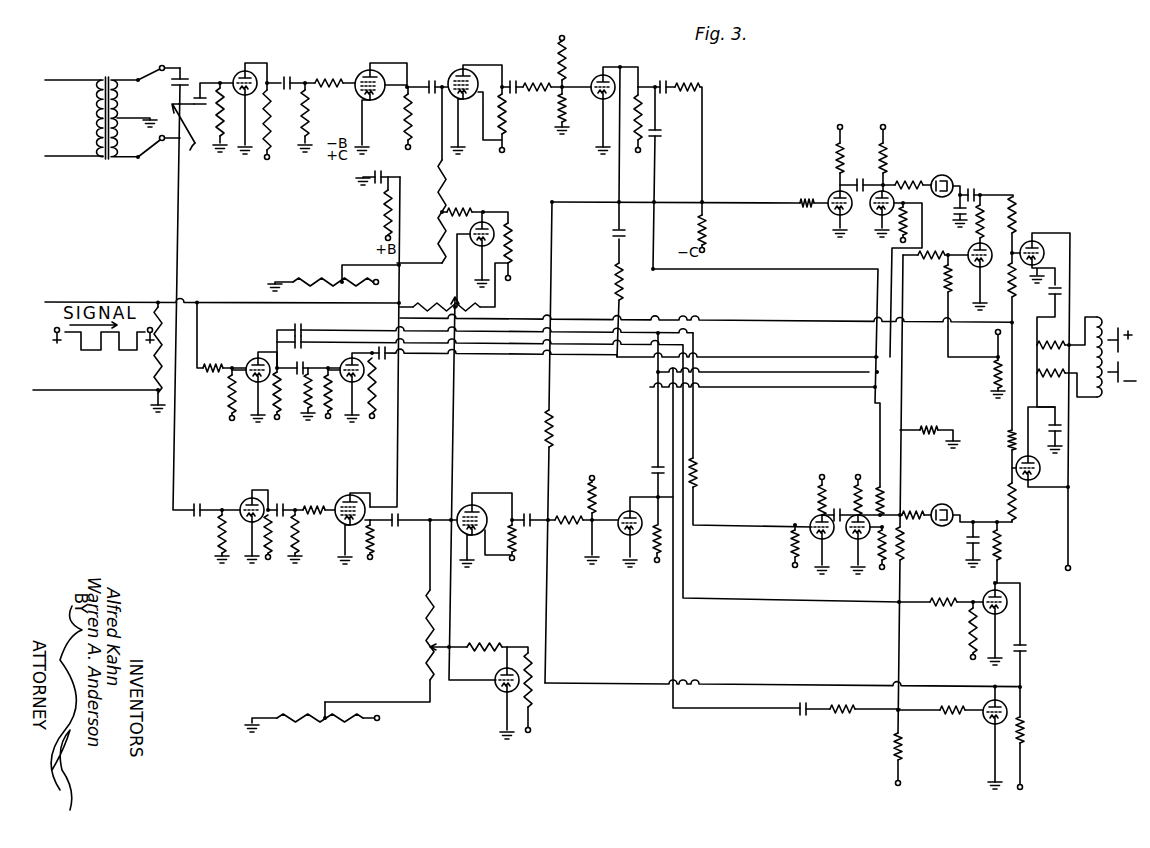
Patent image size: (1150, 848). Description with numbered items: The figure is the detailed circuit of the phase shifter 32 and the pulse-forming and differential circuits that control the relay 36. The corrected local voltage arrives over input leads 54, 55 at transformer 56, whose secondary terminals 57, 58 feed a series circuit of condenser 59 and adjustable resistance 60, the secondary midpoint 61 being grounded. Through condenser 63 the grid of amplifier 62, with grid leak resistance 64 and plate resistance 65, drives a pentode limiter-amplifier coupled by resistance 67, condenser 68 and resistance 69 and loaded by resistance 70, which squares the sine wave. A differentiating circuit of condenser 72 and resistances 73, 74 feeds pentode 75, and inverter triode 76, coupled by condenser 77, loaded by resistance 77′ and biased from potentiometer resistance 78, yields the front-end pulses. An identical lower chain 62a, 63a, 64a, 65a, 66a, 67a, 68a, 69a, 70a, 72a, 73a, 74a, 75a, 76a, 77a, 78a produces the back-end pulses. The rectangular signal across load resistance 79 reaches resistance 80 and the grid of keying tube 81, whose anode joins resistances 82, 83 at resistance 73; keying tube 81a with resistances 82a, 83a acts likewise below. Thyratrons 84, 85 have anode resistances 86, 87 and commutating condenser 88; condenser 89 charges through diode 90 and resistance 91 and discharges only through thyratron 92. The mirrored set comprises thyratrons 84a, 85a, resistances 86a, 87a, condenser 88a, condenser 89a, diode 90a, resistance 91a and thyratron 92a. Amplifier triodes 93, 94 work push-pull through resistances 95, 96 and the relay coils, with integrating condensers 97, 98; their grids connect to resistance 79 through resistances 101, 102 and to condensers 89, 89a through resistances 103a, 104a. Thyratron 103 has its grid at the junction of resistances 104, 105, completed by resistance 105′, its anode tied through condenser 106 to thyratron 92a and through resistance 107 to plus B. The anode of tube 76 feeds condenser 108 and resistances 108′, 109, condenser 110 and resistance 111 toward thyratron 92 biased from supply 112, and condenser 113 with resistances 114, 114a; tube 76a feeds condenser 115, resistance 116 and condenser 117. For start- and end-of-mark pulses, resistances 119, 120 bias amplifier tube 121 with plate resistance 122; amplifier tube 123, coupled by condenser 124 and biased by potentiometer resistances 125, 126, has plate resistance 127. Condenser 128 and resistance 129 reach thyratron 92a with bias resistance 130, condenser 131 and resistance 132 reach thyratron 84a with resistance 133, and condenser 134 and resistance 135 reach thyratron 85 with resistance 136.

The input line 54 is at (72, 78).
The input line 55 is at (66, 155).
The transformer 56 is at (108, 76).
The secondary terminal 57 is at (156, 69).
The secondary terminal 58 is at (150, 146).
The condenser 59 is at (179, 74).
The adjustable resistance 60 is at (199, 155).
The midpoint of the secondary 61 is at (120, 116).
The phase shifter 32 is at (175, 115).
The amplifier 62 is at (238, 72).
The condenser 63 is at (200, 106).
The grid leak resistance 64 is at (227, 117).
The resistance 65 is at (266, 106).
The resistance 67 is at (326, 80).
The condenser 68 is at (288, 77).
The resistance 69 is at (306, 114).
The resistance 70 is at (411, 115).
The condenser 72 is at (433, 79).
The resistance 73 is at (436, 202).
The resistance 74 is at (318, 276).
The pentode 75 is at (472, 74).
The inverter triode 76 is at (596, 76).
The condenser 77 is at (517, 80).
The resistance 77′ is at (642, 94).
The potentiometer resistance 78 is at (555, 104).
The signal load resistance 79 is at (154, 372).
The resistance 80 is at (459, 302).
The keying tube 81 is at (472, 225).
The resistance 82 is at (512, 238).
The resistance 83 is at (473, 212).
The thyratron 84 is at (832, 196).
The thyratron 85 is at (889, 192).
The resistance 86 is at (844, 156).
The resistance 87 is at (889, 154).
The commutating condenser 88 is at (860, 179).
The condenser 89 is at (975, 189).
The diode 90 is at (945, 175).
The resistance 91 is at (911, 178).
The thyratron 92 is at (986, 244).
The amplifier triode 93 is at (1044, 248).
The amplifier triode 94 is at (1040, 475).
The resistance 95 is at (1055, 342).
The resistance 96 is at (1067, 371).
The integrating condenser 97 is at (1060, 287).
The integrating condenser 98 is at (1049, 426).
The resistance 101 is at (1011, 289).
The resistance 102 is at (1010, 446).
The thyratron 103 is at (994, 725).
The resistance 103a is at (1017, 218).
The resistance 104 is at (903, 745).
The resistance 104a is at (1016, 503).
The resistance 105 is at (904, 539).
The resistance 105′ is at (927, 430).
The condenser 106 is at (1027, 647).
The resistance 107 is at (1026, 726).
The condenser 108 is at (662, 136).
The resistance 108′ is at (886, 486).
The resistance 109 is at (898, 557).
The condenser 110 is at (612, 233).
The resistance 111 is at (615, 287).
The minus C supply 112 is at (967, 381).
The condenser 113 is at (668, 94).
The resistance 114 is at (690, 83).
The resistance 114a is at (551, 433).
The condenser 115 is at (651, 469).
The resistance 116 is at (925, 262).
The condenser 117 is at (805, 718).
The resistance 119 is at (215, 365).
The resistance 120 is at (228, 392).
The amplifier tube 121 is at (252, 359).
The resistance 122 is at (277, 391).
The amplifier tube 123 is at (355, 358).
The condenser 124 is at (302, 365).
The potentiometer resistance 125 is at (306, 383).
The potentiometer resistance 126 is at (323, 400).
The resistance 127 is at (403, 393).
The condenser 128 is at (306, 337).
The resistance 129 is at (941, 593).
The resistance 130 is at (971, 632).
The condenser 131 is at (295, 324).
The resistance 132 is at (692, 461).
The resistance 133 is at (783, 555).
The condenser 134 is at (402, 358).
The resistance 135 is at (955, 212).
The resistance 136 is at (910, 224).
The relay 36 is at (1115, 325).
The amplifier 62a is at (249, 493).
The condenser 63a is at (197, 502).
The grid leak resistance 64a is at (218, 537).
The resistance 65a is at (271, 552).
The pentode limiter-amplifier 66a is at (342, 497).
The resistance 67a is at (320, 509).
The condenser 68a is at (282, 497).
The resistance 69a is at (298, 534).
The resistance 70a is at (380, 552).
The condenser 72a is at (400, 514).
The resistance 73a is at (422, 615).
The resistance 74a is at (305, 717).
The pentode 75a is at (476, 504).
The amplifier tube 76a is at (626, 515).
The condenser 77a is at (527, 514).
The potentiometer resistance 78a is at (588, 516).
The keying tube 81a is at (498, 695).
The resistance 82a is at (534, 685).
The resistance 83a is at (476, 645).
The thyratron 84a is at (815, 520).
The thyratron 85a is at (882, 552).
The resistance 86a is at (820, 494).
The resistance 87a is at (859, 500).
The commutating condenser 88a is at (838, 509).
The condenser 89a is at (977, 520).
The diode 90a is at (944, 504).
The resistance 91a is at (911, 512).
The thyratron 92a is at (1008, 601).